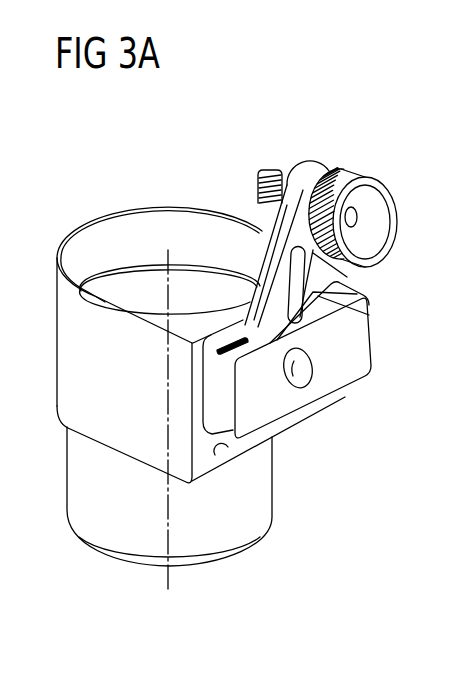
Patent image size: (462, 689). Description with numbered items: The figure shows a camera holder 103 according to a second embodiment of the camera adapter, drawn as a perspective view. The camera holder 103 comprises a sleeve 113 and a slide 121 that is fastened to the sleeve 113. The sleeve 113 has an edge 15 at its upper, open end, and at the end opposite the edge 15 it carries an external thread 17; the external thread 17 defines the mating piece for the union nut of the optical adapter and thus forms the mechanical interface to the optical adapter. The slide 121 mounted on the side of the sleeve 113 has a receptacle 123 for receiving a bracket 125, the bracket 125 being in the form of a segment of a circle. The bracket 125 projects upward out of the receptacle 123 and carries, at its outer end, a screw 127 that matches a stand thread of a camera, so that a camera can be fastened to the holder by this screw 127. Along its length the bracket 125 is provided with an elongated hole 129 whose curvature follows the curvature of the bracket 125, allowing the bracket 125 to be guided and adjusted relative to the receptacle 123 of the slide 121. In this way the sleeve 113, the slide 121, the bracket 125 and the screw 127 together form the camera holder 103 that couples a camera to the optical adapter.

The edge 15 is at (103, 218).
The external thread 17 is at (222, 554).
The camera holder 103 is at (227, 167).
The sleeve 113 is at (258, 488).
The slide 121 is at (345, 368).
The receptacle 123 is at (355, 310).
The bracket 125 is at (353, 281).
The screw 127 is at (359, 170).
The elongated hole 129 is at (292, 291).